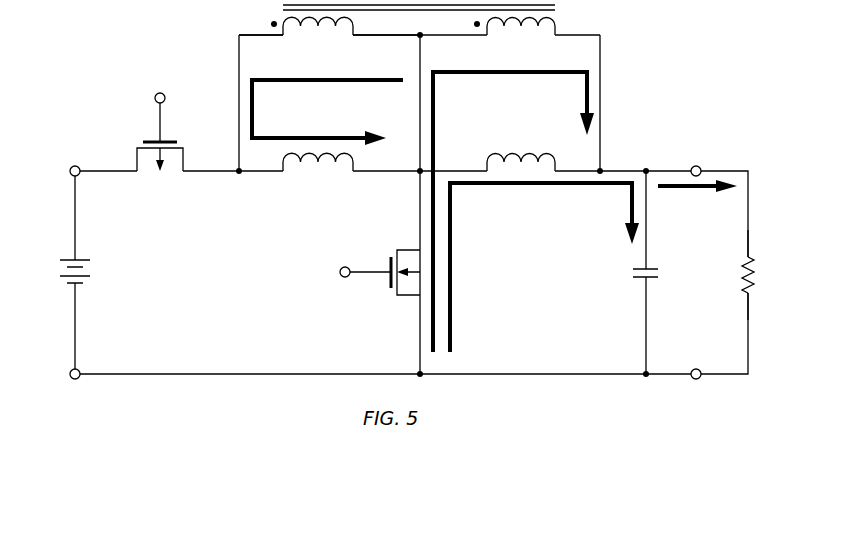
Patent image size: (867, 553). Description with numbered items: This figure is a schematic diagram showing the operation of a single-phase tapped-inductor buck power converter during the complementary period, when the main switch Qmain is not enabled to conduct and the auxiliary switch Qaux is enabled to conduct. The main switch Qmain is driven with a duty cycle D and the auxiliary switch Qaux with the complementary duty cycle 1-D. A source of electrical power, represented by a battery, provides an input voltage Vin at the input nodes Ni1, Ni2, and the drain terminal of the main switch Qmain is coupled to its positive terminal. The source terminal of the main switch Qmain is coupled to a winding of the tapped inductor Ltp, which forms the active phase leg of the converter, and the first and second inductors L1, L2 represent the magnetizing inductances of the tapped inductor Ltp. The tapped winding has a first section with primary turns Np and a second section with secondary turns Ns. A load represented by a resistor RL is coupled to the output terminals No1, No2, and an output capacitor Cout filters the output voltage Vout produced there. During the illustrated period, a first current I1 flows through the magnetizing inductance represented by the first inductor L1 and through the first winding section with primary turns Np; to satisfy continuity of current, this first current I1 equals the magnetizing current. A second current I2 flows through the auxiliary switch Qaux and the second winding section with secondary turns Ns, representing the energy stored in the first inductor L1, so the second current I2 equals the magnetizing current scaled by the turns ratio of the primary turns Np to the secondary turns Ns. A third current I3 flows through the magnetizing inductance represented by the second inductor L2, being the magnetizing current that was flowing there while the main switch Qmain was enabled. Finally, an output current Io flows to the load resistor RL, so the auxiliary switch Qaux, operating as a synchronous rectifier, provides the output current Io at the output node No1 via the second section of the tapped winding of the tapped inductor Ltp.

The primary turns Np is at (312, 40).
The secondary turns Ns is at (514, 40).
The tapped inductor Ltp is at (329, 51).
The first inductor L1 is at (318, 176).
The second inductor L2 is at (521, 146).
The main switch Qmain is at (156, 153).
The duty cycle D is at (160, 85).
The auxiliary switch Qaux is at (385, 257).
The complementary duty cycle 1-D is at (325, 273).
The input voltage Vin is at (57, 272).
The input node Ni1 is at (73, 154).
The input node Ni2 is at (72, 391).
The output node No1 is at (697, 155).
The output terminal No2 is at (695, 359).
The output capacitor Cout is at (622, 268).
The resistor RL is at (733, 275).
The output voltage Vout is at (771, 275).
The first current I1 is at (327, 112).
The second current I2 is at (513, 212).
The third current I3 is at (544, 267).
The output current Io is at (697, 199).